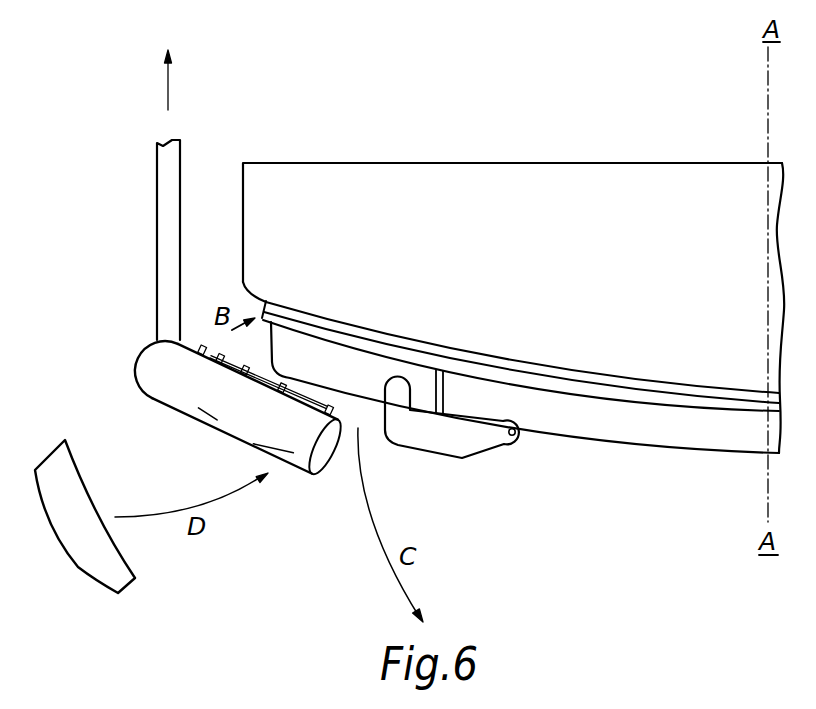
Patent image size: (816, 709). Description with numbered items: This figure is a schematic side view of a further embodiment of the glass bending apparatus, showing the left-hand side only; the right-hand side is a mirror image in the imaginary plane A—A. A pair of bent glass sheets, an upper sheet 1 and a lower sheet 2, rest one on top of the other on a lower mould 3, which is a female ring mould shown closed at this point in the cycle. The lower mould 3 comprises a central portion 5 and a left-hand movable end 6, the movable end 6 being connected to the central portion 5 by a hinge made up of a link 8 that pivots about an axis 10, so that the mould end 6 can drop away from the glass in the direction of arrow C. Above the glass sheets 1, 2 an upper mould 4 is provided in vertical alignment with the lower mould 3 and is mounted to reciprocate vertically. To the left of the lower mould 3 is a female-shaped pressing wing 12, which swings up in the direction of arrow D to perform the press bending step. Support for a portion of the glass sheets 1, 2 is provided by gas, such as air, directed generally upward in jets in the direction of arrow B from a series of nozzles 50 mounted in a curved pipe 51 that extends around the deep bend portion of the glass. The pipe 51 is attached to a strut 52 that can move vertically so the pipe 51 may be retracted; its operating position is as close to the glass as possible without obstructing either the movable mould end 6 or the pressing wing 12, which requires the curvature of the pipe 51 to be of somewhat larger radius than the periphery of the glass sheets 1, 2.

The upper sheet 1 is at (779, 393).
The lower sheet 2 is at (780, 401).
The lower mould 3 is at (613, 474).
The upper mould 4 is at (517, 142).
The central portion 5 is at (663, 427).
The left-hand movable end 6 is at (370, 382).
The link 8 is at (440, 438).
The axis 10 is at (518, 442).
The pressing wing 12 is at (97, 560).
The nozzles 50 is at (280, 385).
The curved pipe 51 is at (183, 397).
The strut 52 is at (157, 282).